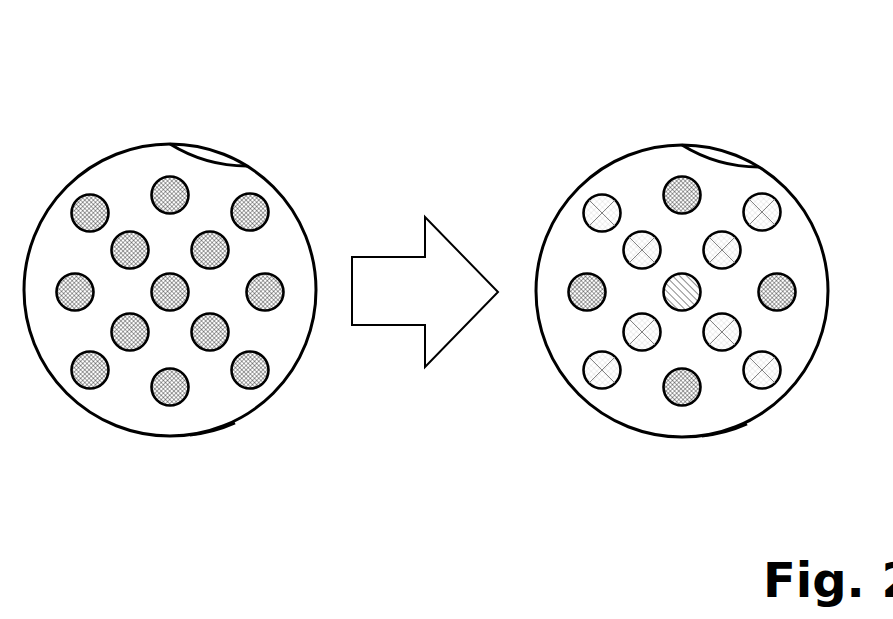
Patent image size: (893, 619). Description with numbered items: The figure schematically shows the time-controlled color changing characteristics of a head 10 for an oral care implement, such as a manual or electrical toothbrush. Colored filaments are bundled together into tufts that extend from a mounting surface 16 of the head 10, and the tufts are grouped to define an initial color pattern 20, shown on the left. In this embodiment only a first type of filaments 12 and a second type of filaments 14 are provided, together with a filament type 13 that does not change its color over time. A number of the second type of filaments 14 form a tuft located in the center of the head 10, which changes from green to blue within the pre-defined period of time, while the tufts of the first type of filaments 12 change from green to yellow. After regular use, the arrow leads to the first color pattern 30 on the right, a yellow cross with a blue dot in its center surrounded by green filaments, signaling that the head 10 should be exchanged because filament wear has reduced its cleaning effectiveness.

The head 10 is at (66, 118).
The first type of filaments 12 is at (254, 212).
The filament type that does not change its color 13 is at (170, 190).
The second type of filaments 14 is at (253, 372).
The mounting surface 16 is at (197, 410).
The initial color pattern 20 is at (257, 150).
The first color pattern 30 is at (767, 150).